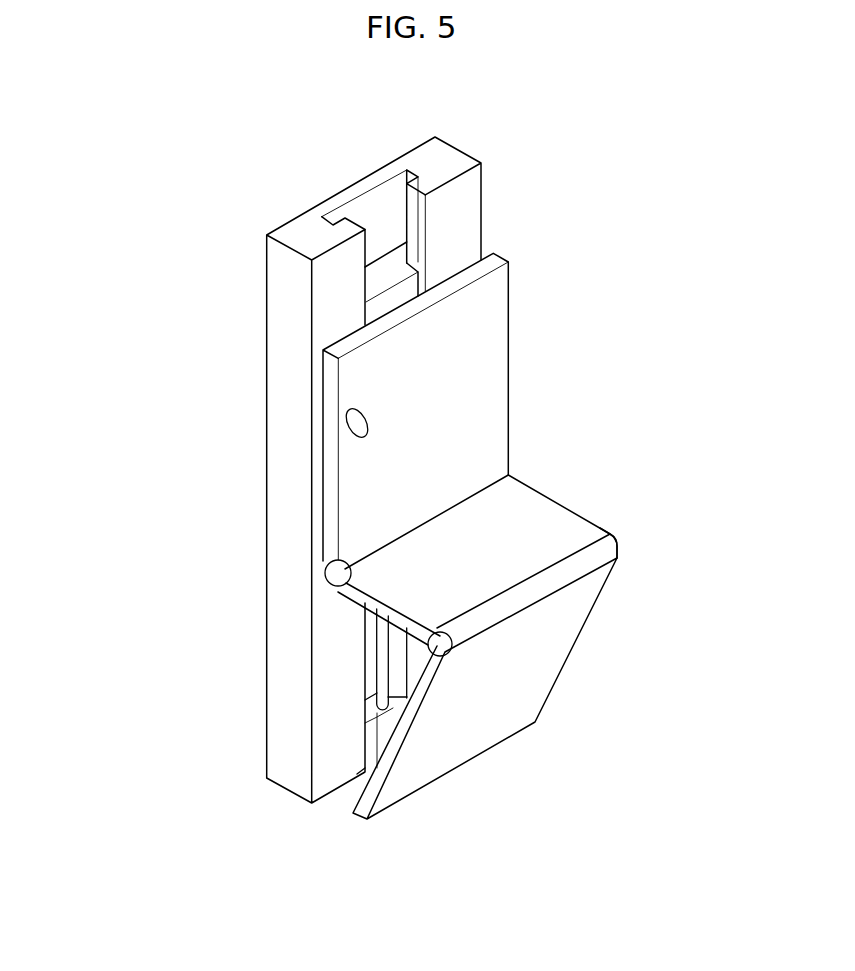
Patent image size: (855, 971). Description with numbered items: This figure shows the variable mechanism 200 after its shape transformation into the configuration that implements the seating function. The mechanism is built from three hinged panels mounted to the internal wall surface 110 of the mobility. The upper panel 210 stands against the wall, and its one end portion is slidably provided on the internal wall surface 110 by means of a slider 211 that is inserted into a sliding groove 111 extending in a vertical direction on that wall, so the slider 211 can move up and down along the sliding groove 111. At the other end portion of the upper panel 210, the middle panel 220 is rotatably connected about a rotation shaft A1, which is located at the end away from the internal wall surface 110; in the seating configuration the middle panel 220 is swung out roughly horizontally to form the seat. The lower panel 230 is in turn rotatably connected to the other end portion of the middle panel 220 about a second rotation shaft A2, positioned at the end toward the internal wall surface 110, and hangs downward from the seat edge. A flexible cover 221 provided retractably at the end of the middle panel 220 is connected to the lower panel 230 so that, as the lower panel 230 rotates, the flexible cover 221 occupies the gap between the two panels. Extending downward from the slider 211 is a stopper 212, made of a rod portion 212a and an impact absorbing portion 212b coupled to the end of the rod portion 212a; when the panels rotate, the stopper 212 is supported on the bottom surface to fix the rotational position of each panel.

The internal wall surface 110 is at (301, 231).
The sliding groove 111 is at (377, 200).
The variable mechanism 200 is at (414, 530).
The upper panel 210 is at (493, 310).
The slider 211 is at (382, 287).
The stopper 212 is at (236, 691).
The rod portion 212a is at (383, 655).
The impact absorbing portion 212b is at (380, 738).
The middle panel 220 is at (537, 527).
The flexible cover 221 is at (618, 540).
The lower panel 230 is at (547, 653).
The rotation shaft A1 is at (326, 577).
The rotation shaft A2 is at (445, 657).